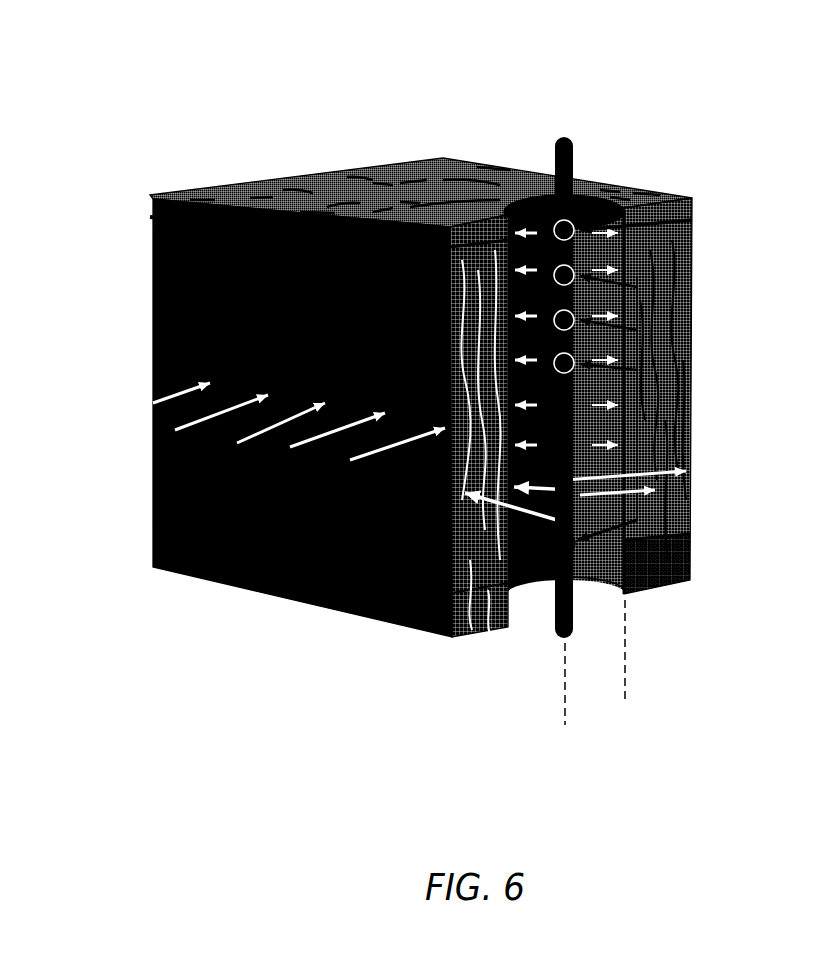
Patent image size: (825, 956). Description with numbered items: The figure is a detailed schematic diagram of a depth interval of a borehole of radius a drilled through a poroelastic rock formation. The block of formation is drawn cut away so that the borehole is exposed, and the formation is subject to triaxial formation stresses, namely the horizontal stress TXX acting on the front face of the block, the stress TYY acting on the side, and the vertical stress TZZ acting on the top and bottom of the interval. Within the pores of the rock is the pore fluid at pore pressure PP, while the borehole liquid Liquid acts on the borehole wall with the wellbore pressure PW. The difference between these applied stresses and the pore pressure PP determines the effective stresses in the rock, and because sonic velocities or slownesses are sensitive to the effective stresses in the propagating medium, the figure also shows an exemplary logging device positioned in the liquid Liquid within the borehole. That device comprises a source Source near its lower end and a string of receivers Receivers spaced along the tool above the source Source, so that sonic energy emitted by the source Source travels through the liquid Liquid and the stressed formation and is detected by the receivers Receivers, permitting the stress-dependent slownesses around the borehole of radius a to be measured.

The wellbore pressure PW is at (624, 340).
The pore pressure PP is at (667, 280).
The receivers Receivers is at (573, 359).
The source Source is at (647, 587).
The liquid Liquid is at (572, 590).
The borehole radius a is at (673, 677).
The triaxial stress Txx TXX is at (777, 357).
The triaxial stress Tyy TYY is at (763, 490).
The triaxial stress Tzz TZZ is at (325, 733).